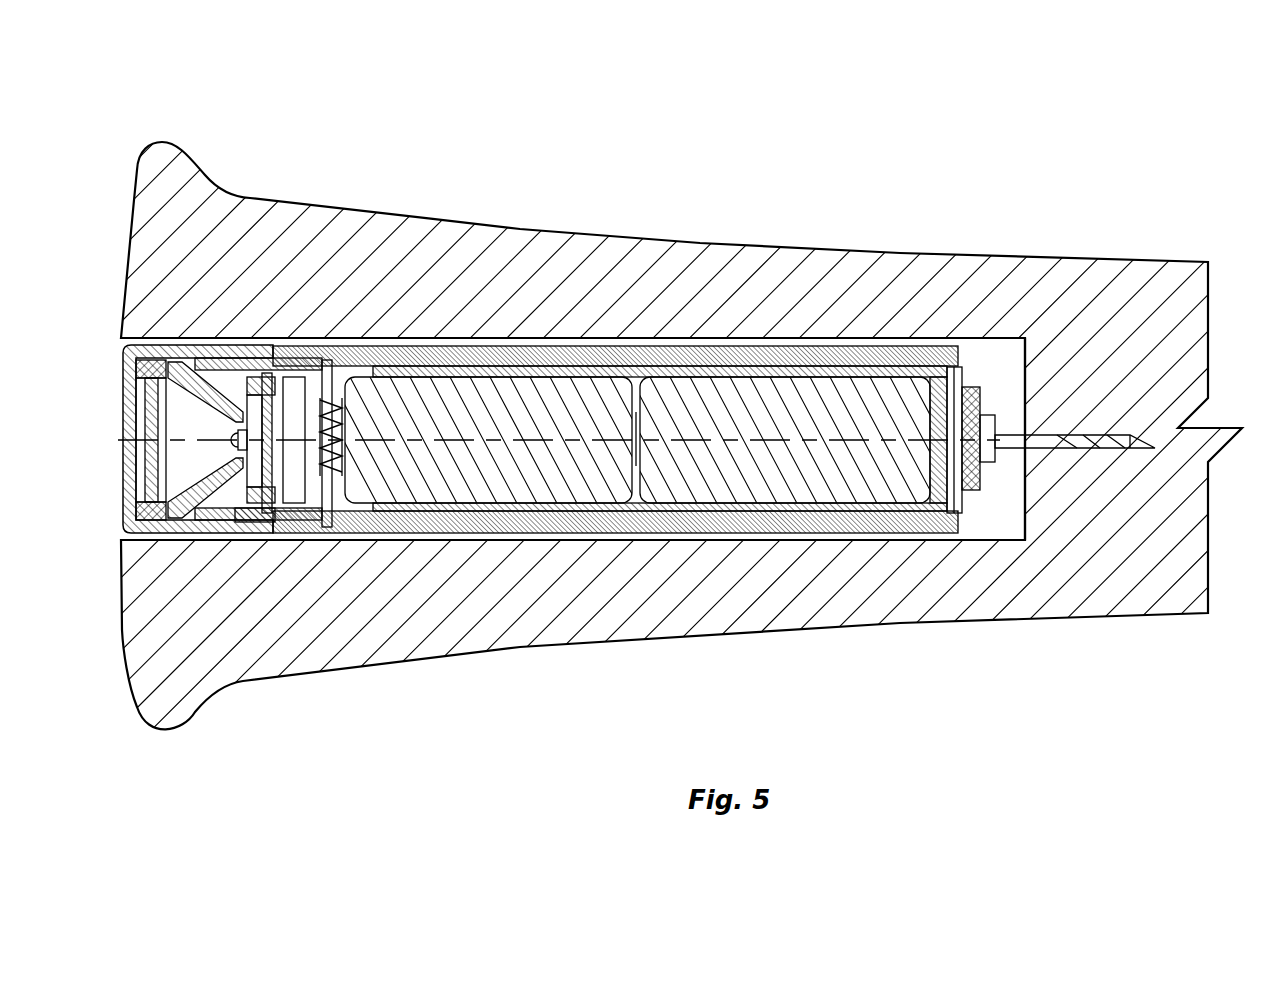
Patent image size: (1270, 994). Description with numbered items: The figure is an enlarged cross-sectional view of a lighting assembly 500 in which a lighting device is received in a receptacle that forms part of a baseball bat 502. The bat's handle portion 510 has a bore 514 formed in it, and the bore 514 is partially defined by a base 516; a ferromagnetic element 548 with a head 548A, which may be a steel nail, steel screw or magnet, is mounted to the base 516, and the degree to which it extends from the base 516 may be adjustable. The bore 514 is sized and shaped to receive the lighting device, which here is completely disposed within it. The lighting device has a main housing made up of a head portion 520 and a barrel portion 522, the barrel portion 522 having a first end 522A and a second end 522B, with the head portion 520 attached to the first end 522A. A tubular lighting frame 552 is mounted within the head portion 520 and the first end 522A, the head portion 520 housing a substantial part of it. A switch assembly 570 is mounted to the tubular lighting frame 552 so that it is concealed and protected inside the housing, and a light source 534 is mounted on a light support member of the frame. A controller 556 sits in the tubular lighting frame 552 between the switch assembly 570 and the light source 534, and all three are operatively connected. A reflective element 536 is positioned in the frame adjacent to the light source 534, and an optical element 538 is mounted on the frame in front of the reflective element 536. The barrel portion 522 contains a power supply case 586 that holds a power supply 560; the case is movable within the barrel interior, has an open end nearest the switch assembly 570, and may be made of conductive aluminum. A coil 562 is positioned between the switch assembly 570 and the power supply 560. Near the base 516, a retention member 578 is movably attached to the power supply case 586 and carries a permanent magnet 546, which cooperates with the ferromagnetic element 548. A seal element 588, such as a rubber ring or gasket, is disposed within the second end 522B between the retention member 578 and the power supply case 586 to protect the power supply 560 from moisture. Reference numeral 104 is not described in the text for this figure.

The lighting assembly 500 is at (868, 95).
The baseball bat 502 is at (788, 247).
The cartridge assembly 104 is at (660, 343).
The handle portion 510 is at (903, 277).
The bore 514 is at (1012, 391).
The base 516 is at (1027, 412).
The retention member 578 is at (978, 352).
The head portion 520 is at (210, 350).
The optical element 538 is at (150, 378).
The reflective element 536 is at (185, 373).
The light source 534 is at (232, 450).
The tubular lighting frame 552 is at (218, 522).
The controller 556 is at (295, 440).
The switch assembly 570 is at (310, 390).
The coil 562 is at (247, 512).
The barrel portion 522 is at (455, 357).
The first end of barrel portion 522A is at (347, 525).
The second end of barrel portion 522B is at (930, 527).
The power supply case 586 is at (565, 372).
The power supply 560 is at (700, 488).
The seal element 588 is at (944, 505).
The permanent magnet 546 is at (968, 488).
The head 548A is at (988, 461).
The ferromagnetic element 548 is at (1073, 450).